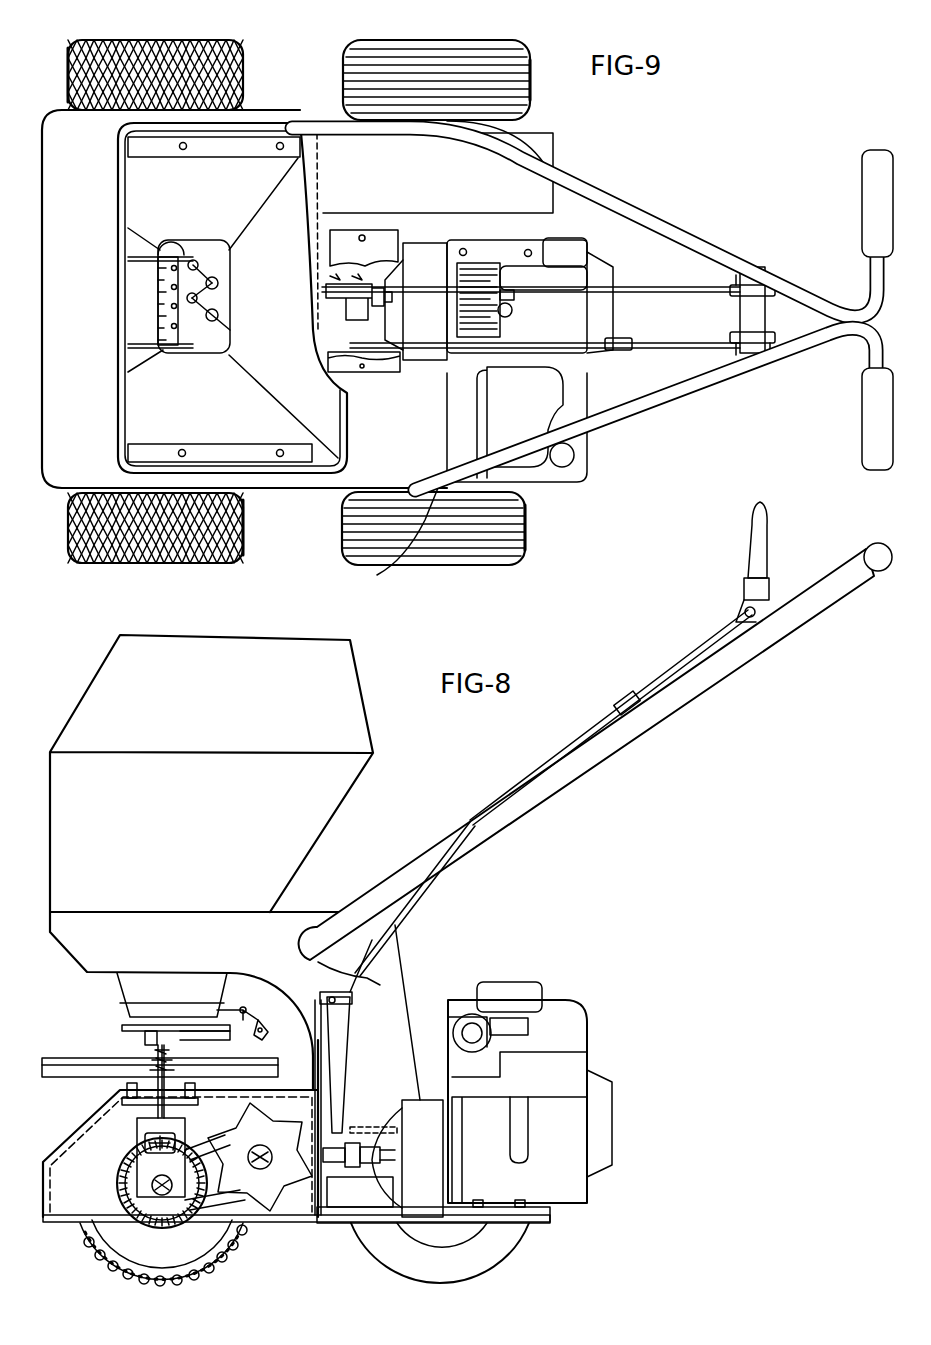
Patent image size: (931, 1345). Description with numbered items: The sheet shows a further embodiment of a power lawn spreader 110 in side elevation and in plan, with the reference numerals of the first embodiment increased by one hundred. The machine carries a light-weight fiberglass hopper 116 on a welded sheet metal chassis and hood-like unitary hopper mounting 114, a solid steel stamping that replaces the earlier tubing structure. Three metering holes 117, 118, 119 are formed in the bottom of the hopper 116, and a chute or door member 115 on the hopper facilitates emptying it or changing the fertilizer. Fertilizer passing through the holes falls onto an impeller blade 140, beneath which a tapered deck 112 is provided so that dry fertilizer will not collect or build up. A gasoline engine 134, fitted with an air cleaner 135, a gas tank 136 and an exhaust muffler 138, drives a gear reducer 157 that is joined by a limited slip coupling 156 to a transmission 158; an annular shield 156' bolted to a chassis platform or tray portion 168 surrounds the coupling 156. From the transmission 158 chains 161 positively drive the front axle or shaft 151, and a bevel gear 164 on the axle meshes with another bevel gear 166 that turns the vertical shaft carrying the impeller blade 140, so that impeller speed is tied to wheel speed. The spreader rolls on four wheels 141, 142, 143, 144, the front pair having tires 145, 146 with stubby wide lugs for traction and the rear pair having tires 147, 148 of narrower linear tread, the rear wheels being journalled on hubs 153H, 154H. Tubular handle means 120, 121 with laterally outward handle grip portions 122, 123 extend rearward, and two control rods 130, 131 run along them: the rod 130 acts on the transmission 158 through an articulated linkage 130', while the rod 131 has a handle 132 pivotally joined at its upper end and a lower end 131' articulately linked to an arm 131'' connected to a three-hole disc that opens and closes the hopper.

In FIG. 9, the power lawn spreader 110 is at (572, 146).
In FIG. 8, the power lawn spreader 110 is at (384, 817).
In FIG. 8, the tapered deck 112 is at (77, 1123).
In FIG. 8, the unitary hopper mounting 114 is at (88, 970).
In FIG. 9, the chute or door member 115 is at (133, 288).
In FIG. 9, the hopper 116 is at (120, 397).
In FIG. 8, the hopper 116 is at (87, 690).
In FIG. 9, the metering hole 117 is at (218, 317).
In FIG. 9, the metering hole 118 is at (218, 282).
In FIG. 9, the metering hole 119 is at (193, 260).
In FIG. 9, the tubular handle means 120 is at (647, 397).
In FIG. 8, the tubular handle means 120 is at (664, 711).
In FIG. 9, the tubular handle means 121 is at (655, 210).
In FIG. 9, the handle grip portion 122 is at (867, 427).
In FIG. 8, the handle grip portion 122 is at (866, 583).
In FIG. 9, the handle grip portion 123 is at (870, 182).
In FIG. 9, the control rod 130 is at (531, 272).
In FIG. 8, the control rod 130 is at (415, 899).
In FIG. 8, the articulated linkage 130' is at (355, 1077).
In FIG. 9, the control rod 131 is at (545, 322).
In FIG. 8, the control rod 131 is at (611, 714).
In FIG. 8, the lower end of rod 131' is at (283, 1042).
In FIG. 8, the arm 131'' is at (246, 1001).
In FIG. 9, the handle 132 is at (767, 337).
In FIG. 8, the handle 132 is at (763, 554).
In FIG. 9, the gasoline engine 134 is at (473, 262).
In FIG. 8, the gasoline engine 134 is at (123, 1083).
In FIG. 9, the air cleaner 135 is at (527, 467).
In FIG. 8, the air cleaner 135 is at (503, 987).
In FIG. 9, the gas tank 136 is at (583, 455).
In FIG. 8, the gas tank 136 is at (577, 1060).
In FIG. 9, the exhaust muffler 138 is at (480, 395).
In FIG. 8, the exhaust muffler 138 is at (467, 1015).
In FIG. 8, the impeller blade 140 is at (90, 1058).
In FIG. 9, the wheel 141 is at (153, 562).
In FIG. 9, the wheel 142 is at (160, 46).
In FIG. 8, the wheel 142 is at (188, 1227).
In FIG. 9, the wheel 143 is at (435, 567).
In FIG. 9, the wheel 144 is at (437, 40).
In FIG. 8, the wheel 144 is at (447, 1230).
In FIG. 9, the tire 145 is at (237, 548).
In FIG. 9, the tire 146 is at (237, 50).
In FIG. 8, the tire 146 is at (150, 1280).
In FIG. 9, the tire 147 is at (527, 537).
In FIG. 9, the tire 148 is at (530, 90).
In FIG. 8, the tire 148 is at (510, 1257).
In FIG. 8, the axle or shaft 151 is at (153, 1187).
In FIG. 9, the hub 153H is at (381, 544).
In FIG. 9, the hub 154H is at (518, 126).
In FIG. 9, the coupling 156 is at (365, 376).
In FIG. 8, the coupling 156 is at (359, 1131).
In FIG. 9, the annular shield 156' is at (364, 215).
In FIG. 8, the annular shield 156' is at (374, 1100).
In FIG. 9, the gear reducer 157 is at (422, 250).
In FIG. 8, the gear reducer 157 is at (428, 1100).
In FIG. 8, the transmission 158 is at (290, 1187).
In FIG. 8, the chain 161 is at (203, 1147).
In FIG. 8, the bevel gear 164 is at (120, 1177).
In FIG. 8, the bevel gear 166 is at (147, 1140).
In FIG. 8, the chassis platform or tray portion 168 is at (345, 1227).